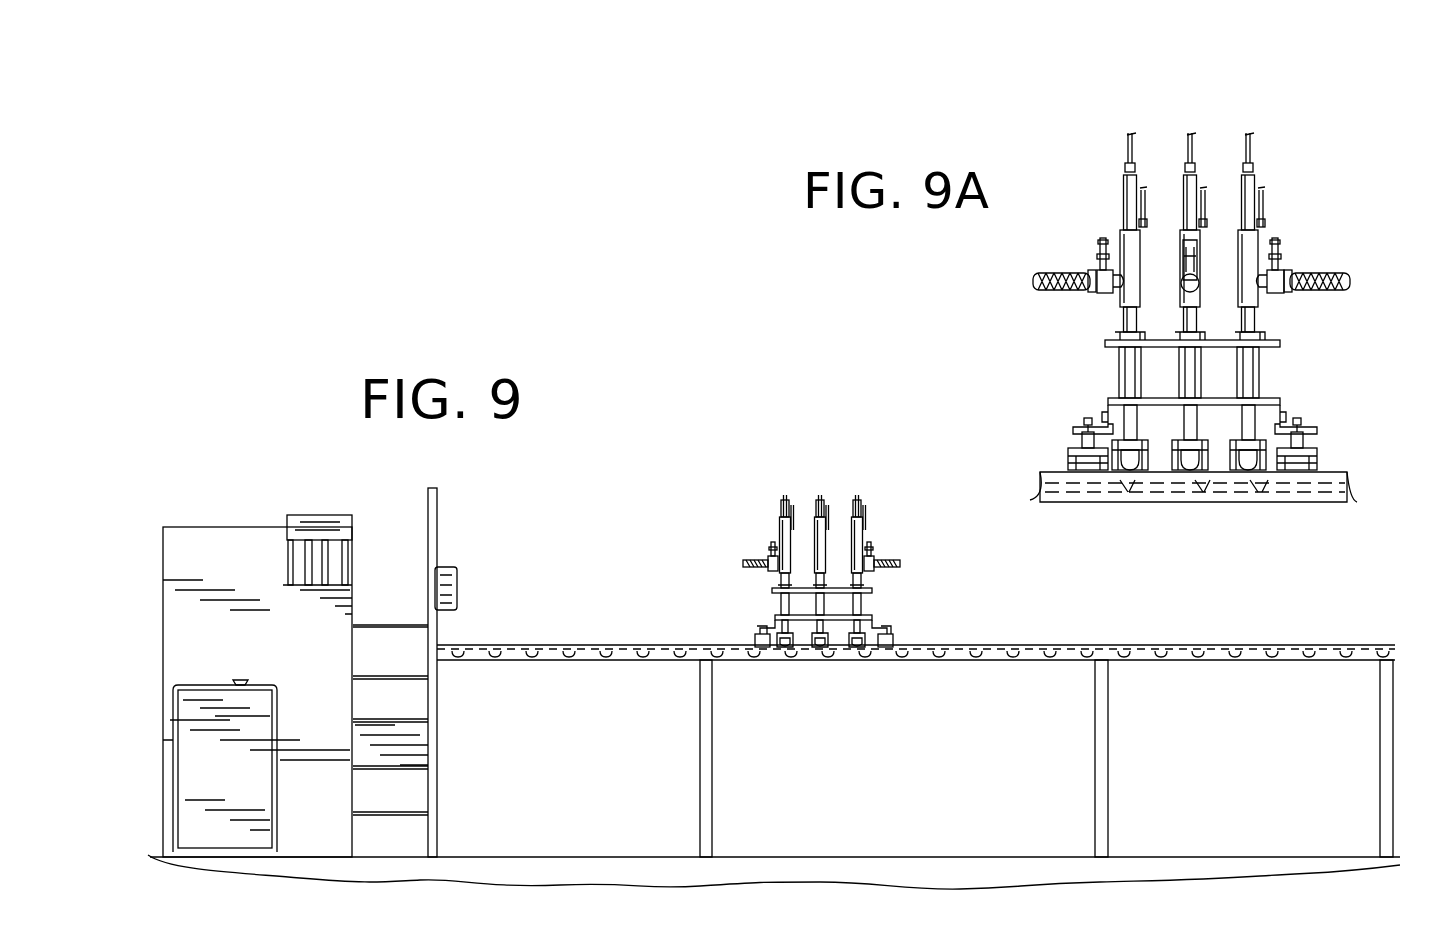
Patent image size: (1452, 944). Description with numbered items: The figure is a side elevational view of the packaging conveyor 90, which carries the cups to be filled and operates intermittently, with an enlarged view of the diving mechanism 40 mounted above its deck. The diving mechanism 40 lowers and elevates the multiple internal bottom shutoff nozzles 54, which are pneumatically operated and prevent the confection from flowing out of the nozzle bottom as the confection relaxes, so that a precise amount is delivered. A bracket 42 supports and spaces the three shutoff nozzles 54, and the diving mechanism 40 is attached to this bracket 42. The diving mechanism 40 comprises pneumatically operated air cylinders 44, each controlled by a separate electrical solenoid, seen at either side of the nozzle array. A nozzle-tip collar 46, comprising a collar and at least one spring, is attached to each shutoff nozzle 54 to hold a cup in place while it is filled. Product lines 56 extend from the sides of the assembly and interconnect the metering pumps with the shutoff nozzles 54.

In FIG. 9, the packaging conveyor 90 is at (138, 432).
In FIG. 9, the diving mechanism 40 is at (752, 598).
In FIG. 9A, the diving mechanism 40 is at (1340, 378).
In FIG. 9, the bracket 42 is at (866, 616).
In FIG. 9A, the bracket 42 is at (1264, 397).
In FIG. 9A, the air cylinder 44 is at (1066, 460).
In FIG. 9A, the nozzle-tip collar 46 is at (1176, 450).
In FIG. 9, the internal bottom shutoff nozzle 54 is at (792, 512).
In FIG. 9A, the internal bottom shutoff nozzle 54 is at (1238, 197).
In FIG. 9, the product line 56 is at (742, 558).
In FIG. 9A, the product line 56 is at (1052, 272).